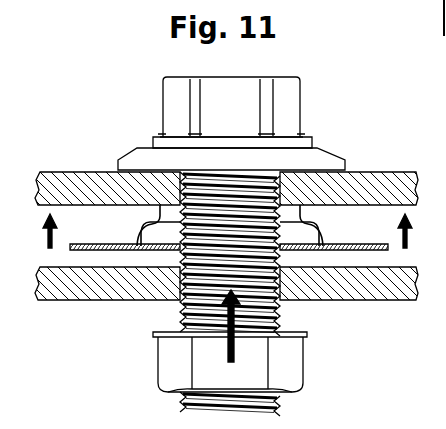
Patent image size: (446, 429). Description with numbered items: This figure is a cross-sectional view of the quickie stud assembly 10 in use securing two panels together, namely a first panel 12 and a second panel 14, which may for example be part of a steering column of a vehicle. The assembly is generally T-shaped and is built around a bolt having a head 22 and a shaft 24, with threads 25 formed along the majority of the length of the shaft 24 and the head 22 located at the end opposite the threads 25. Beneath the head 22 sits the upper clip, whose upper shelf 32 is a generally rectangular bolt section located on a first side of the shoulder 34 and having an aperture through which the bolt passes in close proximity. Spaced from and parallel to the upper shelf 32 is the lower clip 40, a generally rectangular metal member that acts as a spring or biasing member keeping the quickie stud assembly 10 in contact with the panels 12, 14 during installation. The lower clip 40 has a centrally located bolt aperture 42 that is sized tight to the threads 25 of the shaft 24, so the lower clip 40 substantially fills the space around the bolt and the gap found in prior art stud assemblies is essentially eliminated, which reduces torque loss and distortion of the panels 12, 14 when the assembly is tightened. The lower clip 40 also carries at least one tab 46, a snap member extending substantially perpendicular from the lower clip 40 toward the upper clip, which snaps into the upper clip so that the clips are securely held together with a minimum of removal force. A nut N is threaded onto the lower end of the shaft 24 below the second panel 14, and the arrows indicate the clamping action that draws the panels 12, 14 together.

The quickie stud assembly 10 is at (140, 98).
The first panel 12 is at (95, 172).
The second panel 14 is at (103, 300).
The head 22 is at (286, 107).
The shaft 24 is at (180, 412).
The threads 25 is at (182, 312).
The upper shelf 32 is at (153, 142).
The shoulder 34 is at (286, 213).
The lower clip 40 is at (367, 250).
The bolt aperture 42 is at (158, 220).
The tab 46 is at (340, 218).
The nut N is at (302, 370).